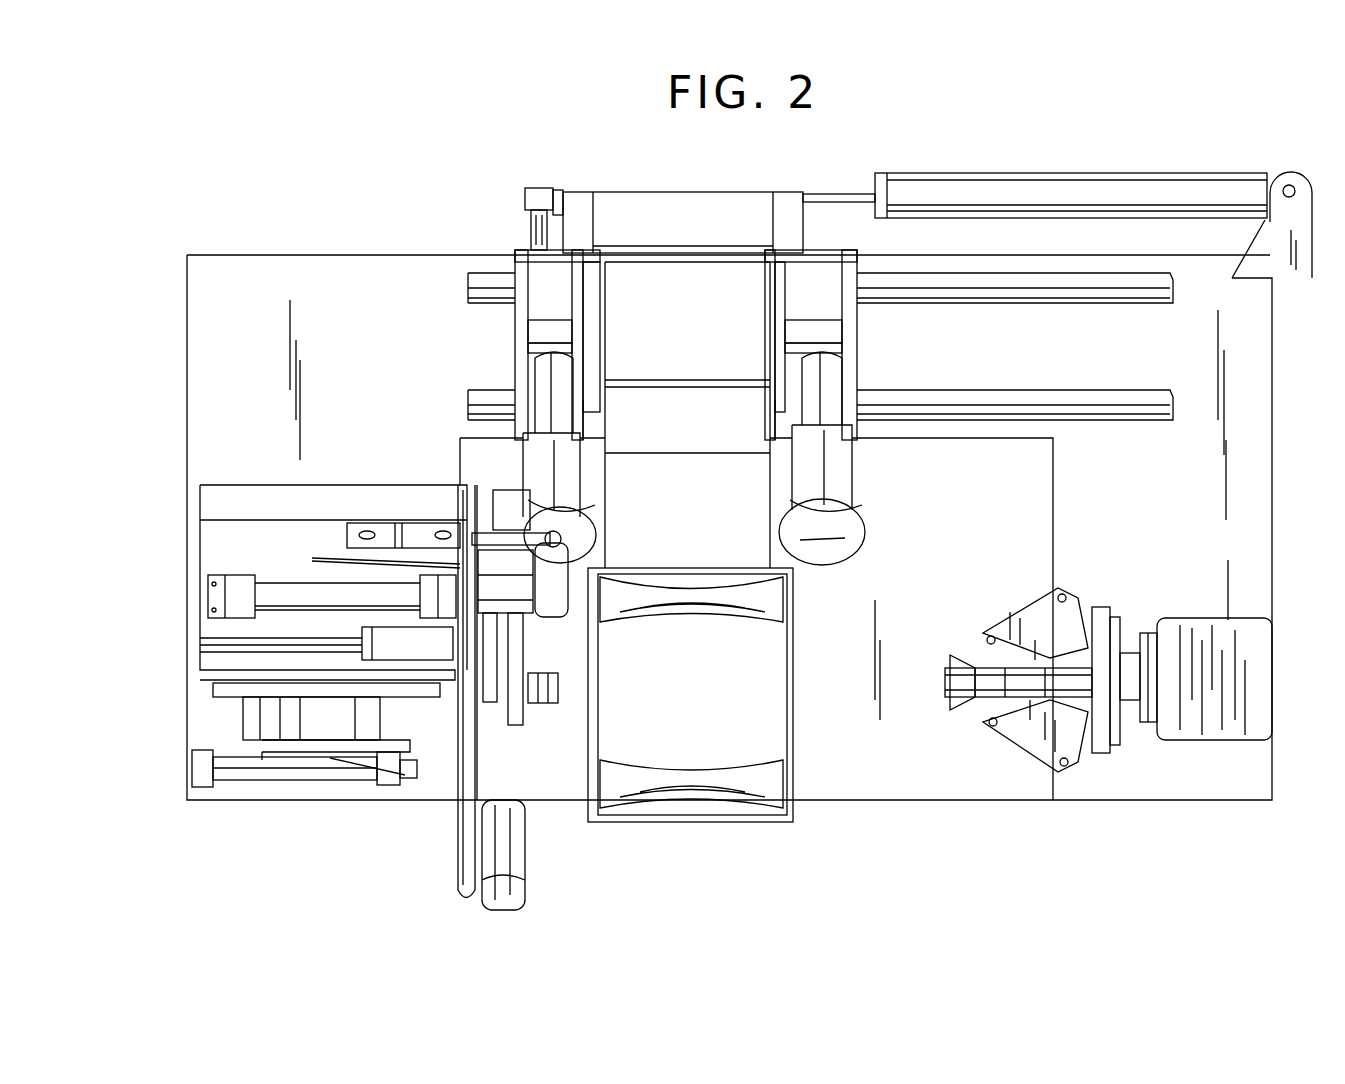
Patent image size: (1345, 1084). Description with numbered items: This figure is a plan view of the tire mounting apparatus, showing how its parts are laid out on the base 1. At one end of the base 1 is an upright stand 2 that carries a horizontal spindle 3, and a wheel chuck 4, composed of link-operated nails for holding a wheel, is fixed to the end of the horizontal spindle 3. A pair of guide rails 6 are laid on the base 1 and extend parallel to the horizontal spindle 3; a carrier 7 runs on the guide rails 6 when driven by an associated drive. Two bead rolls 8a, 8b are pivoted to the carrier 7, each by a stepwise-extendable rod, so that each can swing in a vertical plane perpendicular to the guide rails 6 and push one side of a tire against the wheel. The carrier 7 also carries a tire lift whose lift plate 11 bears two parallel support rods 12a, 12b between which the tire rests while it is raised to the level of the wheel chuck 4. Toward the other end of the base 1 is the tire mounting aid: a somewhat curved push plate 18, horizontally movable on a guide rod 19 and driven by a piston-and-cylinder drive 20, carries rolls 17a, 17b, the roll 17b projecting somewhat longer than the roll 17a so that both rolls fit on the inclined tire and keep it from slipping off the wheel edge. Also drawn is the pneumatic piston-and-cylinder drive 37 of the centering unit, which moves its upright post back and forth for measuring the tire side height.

The base 1 is at (1250, 484).
The upright stand 2 is at (1212, 637).
The horizontal spindle 3 is at (1138, 665).
The wheel chuck 4 is at (1005, 595).
The guide rails 6 is at (1112, 290).
The carrier 7 is at (515, 345).
The bead roll 8a is at (567, 478).
The bead roll 8b is at (845, 470).
The lift plate 11 is at (742, 822).
The support rod 12a is at (708, 600).
The support rod 12b is at (718, 775).
The roll 17a is at (525, 870).
The roll 17b is at (548, 612).
The push plate 18 is at (458, 856).
The guide rod 19 is at (205, 643).
The piston-and-cylinder drive 20 is at (272, 588).
The pneumatic piston-and-cylinder drive 37 is at (322, 780).